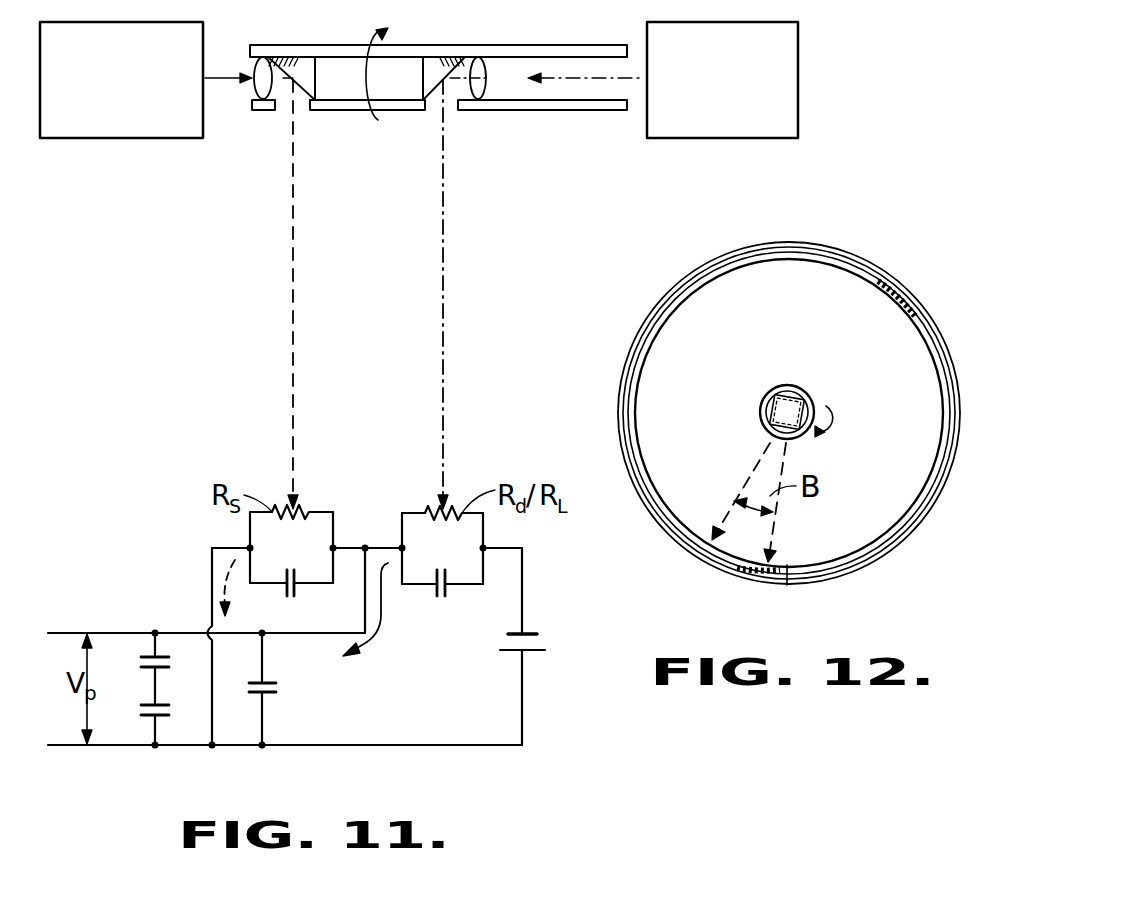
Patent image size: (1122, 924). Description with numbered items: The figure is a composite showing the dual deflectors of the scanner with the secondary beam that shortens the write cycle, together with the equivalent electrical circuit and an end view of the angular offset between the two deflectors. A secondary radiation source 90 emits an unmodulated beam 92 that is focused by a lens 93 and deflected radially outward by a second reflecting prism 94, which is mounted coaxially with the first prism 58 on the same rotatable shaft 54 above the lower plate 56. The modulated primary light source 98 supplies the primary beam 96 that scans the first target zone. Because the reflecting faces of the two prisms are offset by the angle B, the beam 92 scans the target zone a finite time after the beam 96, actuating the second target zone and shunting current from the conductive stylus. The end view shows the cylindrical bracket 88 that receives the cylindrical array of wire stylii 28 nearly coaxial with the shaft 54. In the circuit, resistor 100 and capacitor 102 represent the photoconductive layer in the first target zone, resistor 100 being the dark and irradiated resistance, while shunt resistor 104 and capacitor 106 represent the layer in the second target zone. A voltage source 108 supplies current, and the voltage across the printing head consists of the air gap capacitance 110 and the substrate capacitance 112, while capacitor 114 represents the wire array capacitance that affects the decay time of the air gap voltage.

In FIG. 12, the wire stylii 28 is at (903, 292).
In FIG. 11, the rotatable shaft 54 is at (538, 45).
In FIG. 12, the rotatable shaft 54 is at (790, 385).
In FIG. 11, the bottom plate 56 is at (482, 92).
In FIG. 11, the prism 58 is at (436, 57).
In FIG. 12, the prism 58 is at (768, 415).
In FIG. 12, the cylindrical bracket 88 is at (818, 243).
In FIG. 11, the secondary radiation source 90 is at (178, 140).
In FIG. 11, the unmodulated beam 92 is at (295, 213).
In FIG. 12, the unmodulated beam 92 is at (776, 538).
In FIG. 11, the lens 93 is at (262, 95).
In FIG. 11, the reflecting prism 94 is at (301, 57).
In FIG. 12, the reflecting prism 94 is at (803, 410).
In FIG. 11, the beam 96 is at (445, 222).
In FIG. 12, the beam 96 is at (750, 478).
In FIG. 11, the modulated primary light source 98 is at (693, 140).
In FIG. 11, the resistor 100 is at (432, 510).
In FIG. 11, the capacitor 102 is at (441, 598).
In FIG. 11, the shunt resistor 104 is at (304, 511).
In FIG. 11, the capacitor 106 is at (294, 597).
In FIG. 11, the voltage source 108 is at (539, 641).
In FIG. 11, the capacitance 110 is at (160, 660).
In FIG. 11, the capacitance 112 is at (170, 700).
In FIG. 11, the capacitor 114 is at (268, 695).